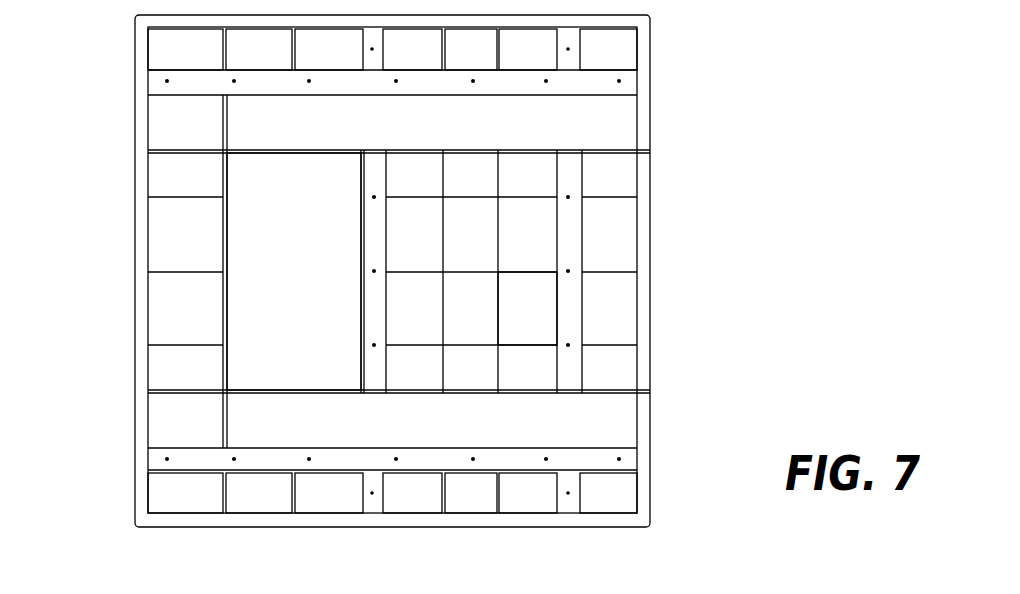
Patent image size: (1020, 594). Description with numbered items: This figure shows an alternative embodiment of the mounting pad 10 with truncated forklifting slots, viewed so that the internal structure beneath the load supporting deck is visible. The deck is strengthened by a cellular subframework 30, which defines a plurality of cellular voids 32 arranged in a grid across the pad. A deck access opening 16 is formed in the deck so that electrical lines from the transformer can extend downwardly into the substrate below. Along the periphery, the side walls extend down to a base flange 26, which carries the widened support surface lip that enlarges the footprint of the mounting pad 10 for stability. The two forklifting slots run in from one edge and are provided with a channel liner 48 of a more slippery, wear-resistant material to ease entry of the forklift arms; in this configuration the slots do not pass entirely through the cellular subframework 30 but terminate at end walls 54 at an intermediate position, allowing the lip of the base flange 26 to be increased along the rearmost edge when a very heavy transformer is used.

The mounting pad 10 is at (489, 244).
The deck access opening 16 is at (268, 223).
The base flange 26 is at (136, 508).
The cellular subframework 30 is at (532, 195).
The cellular voids 32 is at (538, 310).
The channel liner 48 is at (607, 145).
The end walls 54 is at (227, 135).